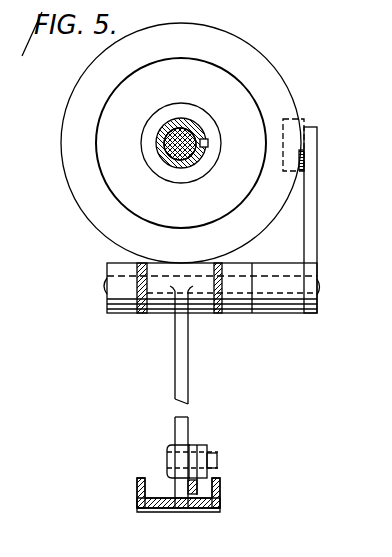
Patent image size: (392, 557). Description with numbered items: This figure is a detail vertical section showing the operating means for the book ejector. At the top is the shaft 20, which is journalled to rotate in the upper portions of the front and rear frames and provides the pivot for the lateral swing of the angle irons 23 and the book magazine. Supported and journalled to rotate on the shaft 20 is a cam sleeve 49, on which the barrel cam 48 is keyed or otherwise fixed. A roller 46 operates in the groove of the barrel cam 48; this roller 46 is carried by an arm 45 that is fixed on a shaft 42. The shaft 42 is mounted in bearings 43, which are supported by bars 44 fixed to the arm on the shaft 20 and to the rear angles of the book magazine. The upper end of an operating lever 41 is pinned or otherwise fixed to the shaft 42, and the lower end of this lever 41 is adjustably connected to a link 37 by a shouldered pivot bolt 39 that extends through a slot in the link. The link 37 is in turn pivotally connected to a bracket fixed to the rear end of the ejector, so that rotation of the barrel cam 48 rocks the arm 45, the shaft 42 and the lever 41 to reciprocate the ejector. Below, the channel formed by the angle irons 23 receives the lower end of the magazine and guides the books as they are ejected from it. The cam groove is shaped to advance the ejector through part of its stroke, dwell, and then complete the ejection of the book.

The barrel cam 48 is at (273, 73).
The cam sleeve 49 is at (192, 126).
The shaft 20 is at (173, 161).
The roller 46 is at (300, 120).
The arm 45 is at (310, 209).
The bearings 43 is at (108, 312).
The shaft 42 is at (104, 290).
The bars 44 is at (141, 312).
The operating lever 41 is at (185, 381).
The shouldered pivot bolt 39 is at (167, 450).
The link 37 is at (197, 487).
The angle irons 23 is at (220, 492).